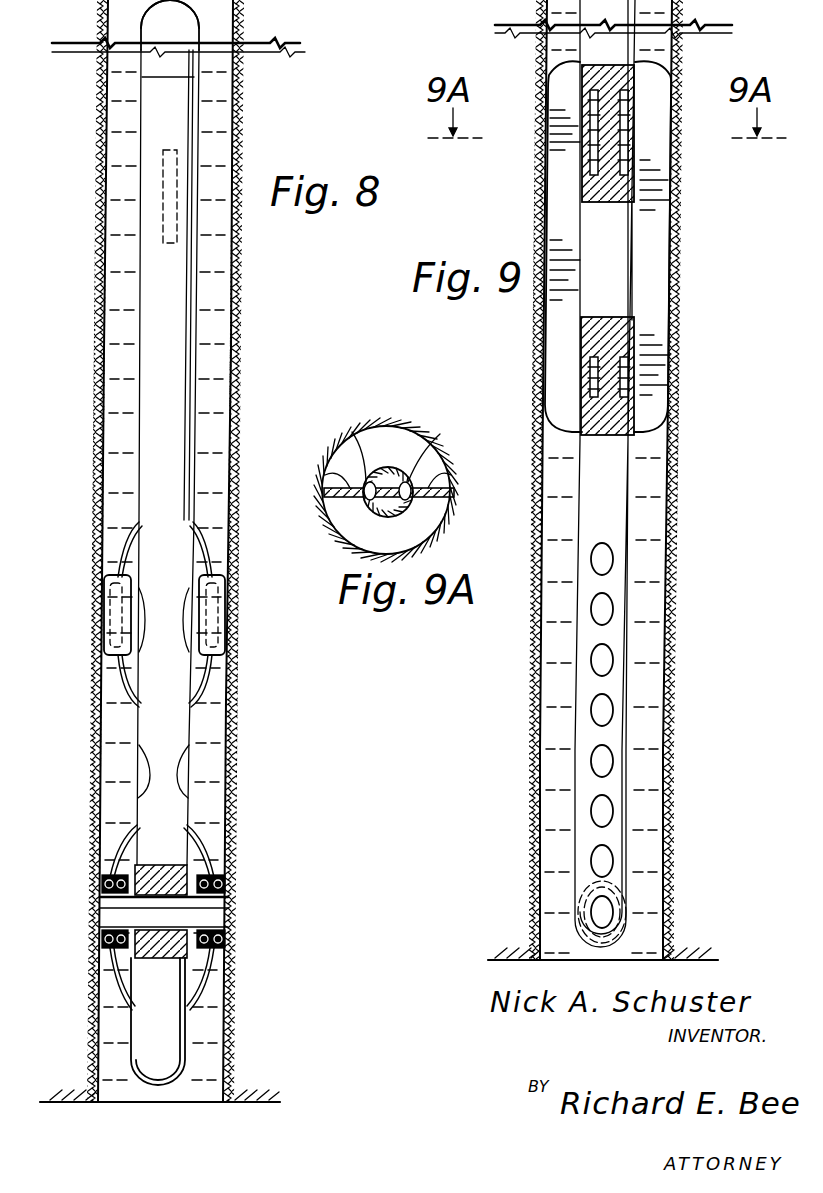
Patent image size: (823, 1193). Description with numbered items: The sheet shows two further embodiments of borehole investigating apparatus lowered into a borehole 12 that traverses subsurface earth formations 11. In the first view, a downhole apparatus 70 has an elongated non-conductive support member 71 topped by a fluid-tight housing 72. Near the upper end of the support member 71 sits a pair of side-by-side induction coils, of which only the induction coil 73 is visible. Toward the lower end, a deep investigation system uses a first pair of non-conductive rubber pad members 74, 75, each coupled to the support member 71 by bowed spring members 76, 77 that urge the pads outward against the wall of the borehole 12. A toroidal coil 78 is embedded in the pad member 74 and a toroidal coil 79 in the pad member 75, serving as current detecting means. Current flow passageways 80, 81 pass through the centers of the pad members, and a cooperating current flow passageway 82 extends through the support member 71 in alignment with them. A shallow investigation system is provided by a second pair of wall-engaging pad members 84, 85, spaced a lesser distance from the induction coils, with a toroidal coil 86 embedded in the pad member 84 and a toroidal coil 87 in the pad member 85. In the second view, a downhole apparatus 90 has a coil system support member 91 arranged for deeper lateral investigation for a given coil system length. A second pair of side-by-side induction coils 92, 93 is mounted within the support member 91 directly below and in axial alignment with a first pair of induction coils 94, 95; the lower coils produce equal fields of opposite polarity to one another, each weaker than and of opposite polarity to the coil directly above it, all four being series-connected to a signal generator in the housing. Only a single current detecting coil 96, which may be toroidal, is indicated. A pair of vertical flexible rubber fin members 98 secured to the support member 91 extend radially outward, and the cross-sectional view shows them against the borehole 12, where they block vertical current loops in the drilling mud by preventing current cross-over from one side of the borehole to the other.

In FIG. 8, the subsurface earth formations 11 is at (86, 337).
In FIG. 9, the subsurface earth formations 11 is at (690, 587).
In FIG. 8, the borehole 12 is at (108, 254).
In FIG. 9, the borehole 12 is at (674, 524).
In FIG. 9A, the borehole 12 is at (380, 430).
In FIG. 8, the downhole apparatus 70 is at (134, 389).
In FIG. 8, the support member 71 is at (135, 790).
In FIG. 8, the fluid-tight housing 72 is at (205, 26).
In FIG. 8, the induction coil 73 is at (160, 177).
In FIG. 8, the pad member 74 is at (105, 945).
In FIG. 8, the pad member 75 is at (228, 950).
In FIG. 8, the bowed spring member 76 is at (108, 970).
In FIG. 8, the bowed spring member 77 is at (225, 975).
In FIG. 8, the toroidal coil 78 is at (103, 880).
In FIG. 8, the toroidal coil 79 is at (228, 880).
In FIG. 8, the current flow passageway 80 is at (100, 910).
In FIG. 8, the current flow passageway 81 is at (232, 918).
In FIG. 8, the current flow passageway 82 is at (232, 898).
In FIG. 8, the pad member 84 is at (105, 648).
In FIG. 8, the pad member 85 is at (225, 655).
In FIG. 8, the toroidal coil 86 is at (102, 578).
In FIG. 8, the toroidal coil 87 is at (228, 578).
In FIG. 9, the downhole apparatus 90 is at (631, 494).
In FIG. 9, the coil system support member 91 is at (626, 650).
In FIG. 9A, the coil system support member 91 is at (360, 512).
In FIG. 9, the induction coil 92 is at (592, 377).
In FIG. 9, the induction coil 93 is at (628, 385).
In FIG. 9, the induction coil 94 is at (596, 155).
In FIG. 9A, the induction coil 94 is at (352, 434).
In FIG. 9, the induction coil 95 is at (630, 152).
In FIG. 9A, the induction coil 95 is at (440, 434).
In FIG. 9, the current detecting coil 96 is at (622, 907).
In FIG. 9, the fin members 98 is at (570, 78).
In FIG. 9A, the fin members 98 is at (335, 478).